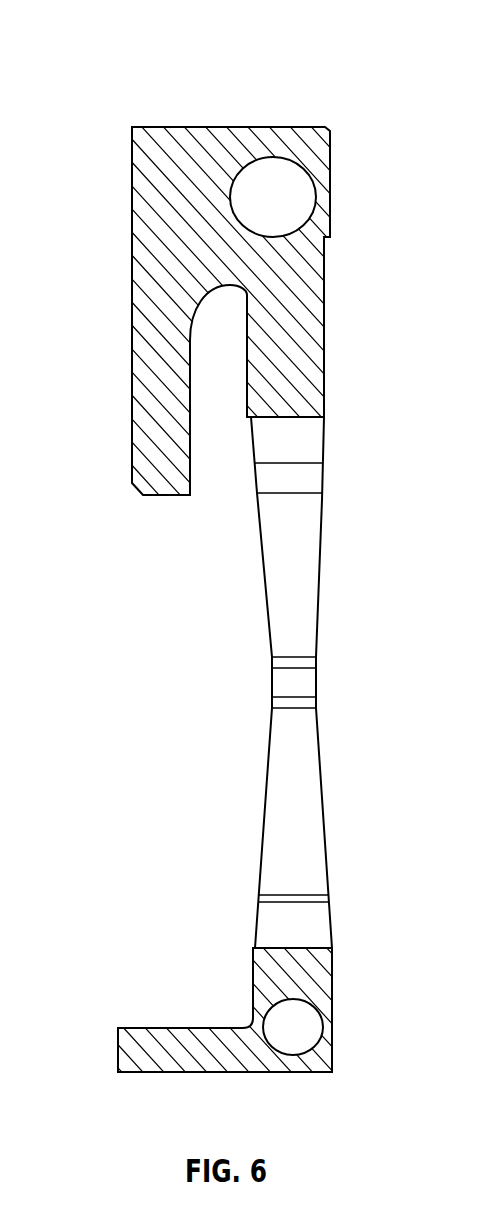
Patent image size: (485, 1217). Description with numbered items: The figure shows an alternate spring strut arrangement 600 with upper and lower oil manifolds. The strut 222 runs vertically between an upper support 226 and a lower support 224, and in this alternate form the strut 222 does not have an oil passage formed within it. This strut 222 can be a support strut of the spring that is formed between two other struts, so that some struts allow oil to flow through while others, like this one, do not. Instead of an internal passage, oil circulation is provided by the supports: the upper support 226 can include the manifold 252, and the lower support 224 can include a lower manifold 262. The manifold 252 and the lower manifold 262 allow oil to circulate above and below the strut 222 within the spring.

The alternate spring strut view 600 is at (137, 53).
The upper support 226 is at (305, 281).
The manifold 252 is at (263, 178).
The strut 222 is at (323, 820).
The lower support 224 is at (172, 1043).
The lower manifold 262 is at (293, 1035).